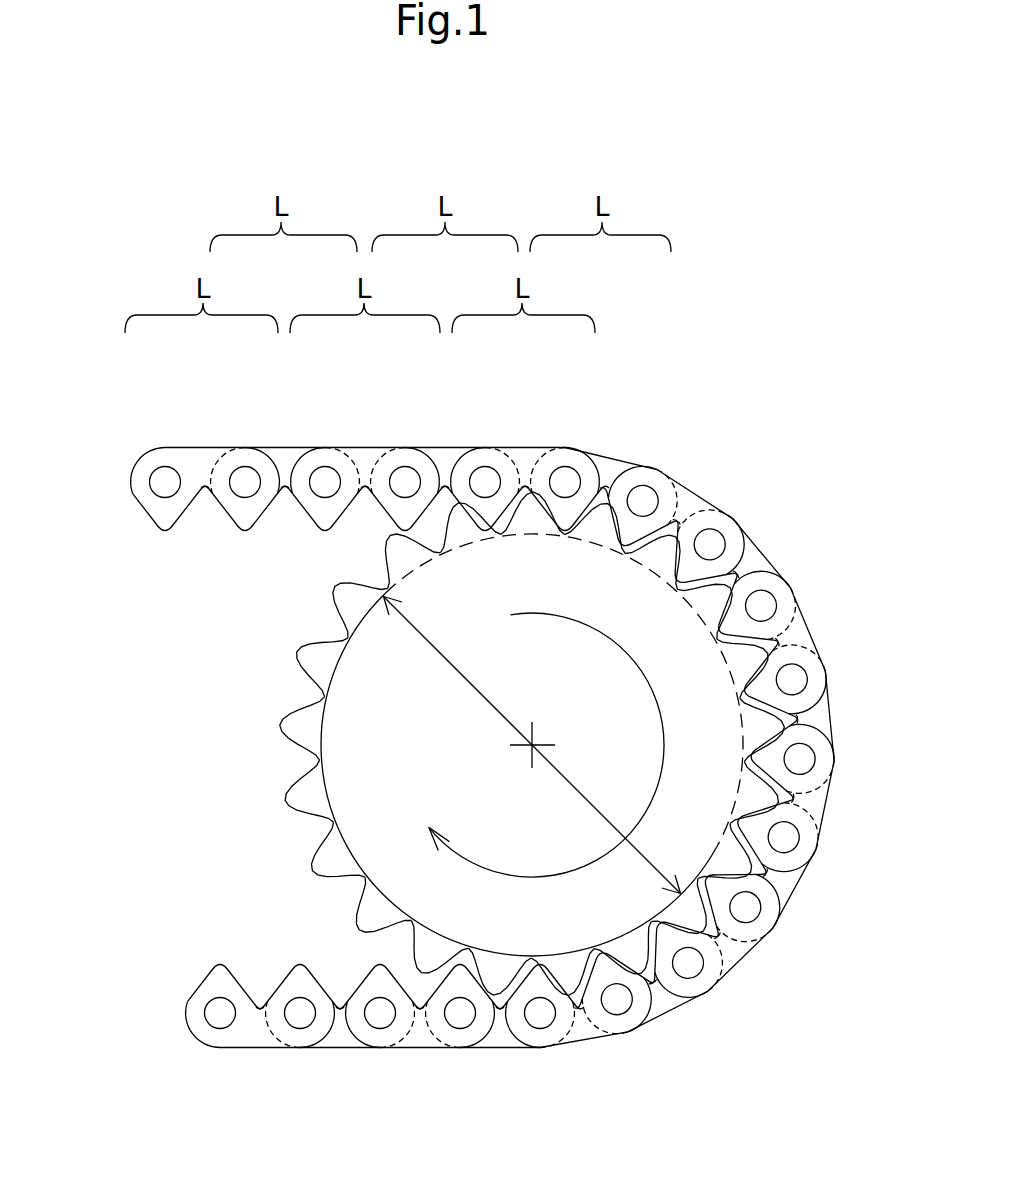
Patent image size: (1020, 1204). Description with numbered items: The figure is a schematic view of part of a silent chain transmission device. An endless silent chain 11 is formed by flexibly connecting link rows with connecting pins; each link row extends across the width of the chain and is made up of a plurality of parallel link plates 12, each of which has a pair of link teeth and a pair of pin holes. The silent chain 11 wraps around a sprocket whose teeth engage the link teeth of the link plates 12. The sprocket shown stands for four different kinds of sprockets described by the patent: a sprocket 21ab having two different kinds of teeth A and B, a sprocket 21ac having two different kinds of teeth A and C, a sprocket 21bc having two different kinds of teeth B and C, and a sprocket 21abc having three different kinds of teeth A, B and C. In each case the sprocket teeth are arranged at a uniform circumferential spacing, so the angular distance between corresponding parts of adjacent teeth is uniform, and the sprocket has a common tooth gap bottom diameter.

The silent chain 11 is at (484, 710).
The link plate 12 is at (827, 429).
In FIG. 1, the sprocket 21ab is at (422, 746).
In FIG. 1, the sprocket 21ac is at (422, 746).
In FIG. 1, the sprocket 21bc is at (422, 746).
In FIG. 1, the sprocket 21abc is at (167, 630).